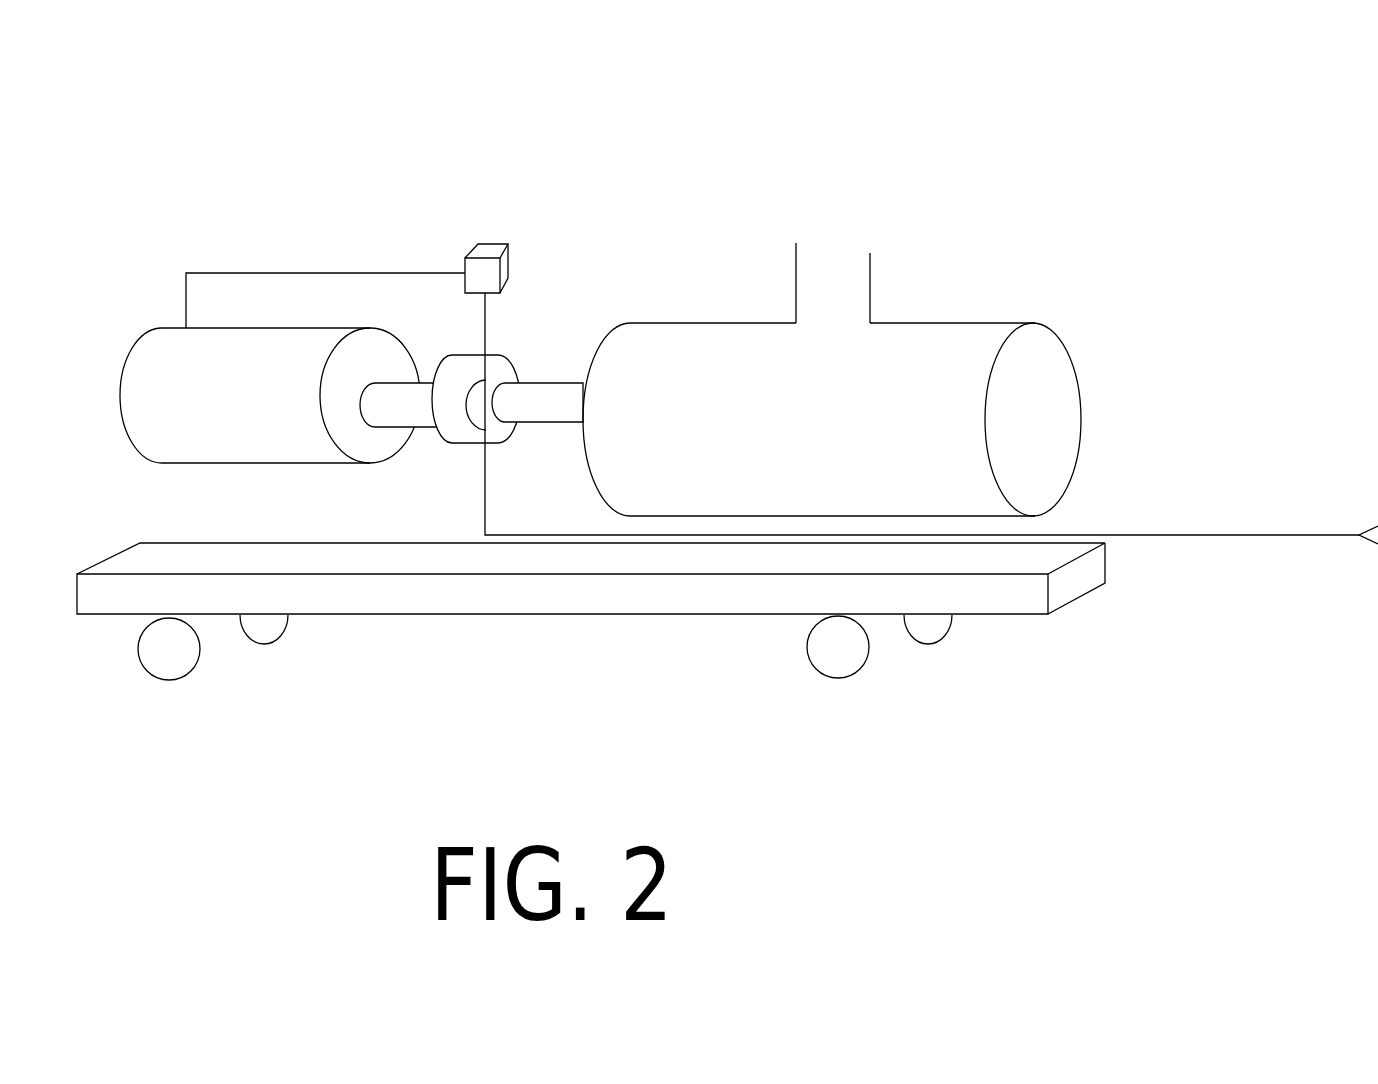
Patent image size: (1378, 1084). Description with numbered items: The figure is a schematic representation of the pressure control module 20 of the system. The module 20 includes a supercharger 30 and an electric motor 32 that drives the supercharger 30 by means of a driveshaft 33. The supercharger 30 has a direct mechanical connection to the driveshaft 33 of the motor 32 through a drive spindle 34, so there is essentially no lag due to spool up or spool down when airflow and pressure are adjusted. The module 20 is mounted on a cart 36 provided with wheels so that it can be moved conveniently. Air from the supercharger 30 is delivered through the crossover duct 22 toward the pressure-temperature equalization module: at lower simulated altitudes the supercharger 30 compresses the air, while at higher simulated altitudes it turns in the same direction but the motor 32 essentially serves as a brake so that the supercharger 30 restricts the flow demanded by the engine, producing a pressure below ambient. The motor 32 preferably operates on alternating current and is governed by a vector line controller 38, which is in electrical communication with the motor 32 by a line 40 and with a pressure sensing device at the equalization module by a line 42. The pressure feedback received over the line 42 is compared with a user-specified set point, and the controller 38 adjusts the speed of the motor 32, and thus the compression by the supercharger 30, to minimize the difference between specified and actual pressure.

The pressure control module 20 is at (289, 212).
The crossover duct 22 is at (875, 283).
The supercharger 30 is at (826, 441).
The electric motor 32 is at (260, 429).
The driveshaft 33 is at (416, 432).
The drive spindle 34 is at (553, 380).
The cart 36 is at (481, 593).
The vector line controller 38 is at (488, 244).
The line 40 is at (363, 272).
The line 42 is at (1200, 530).